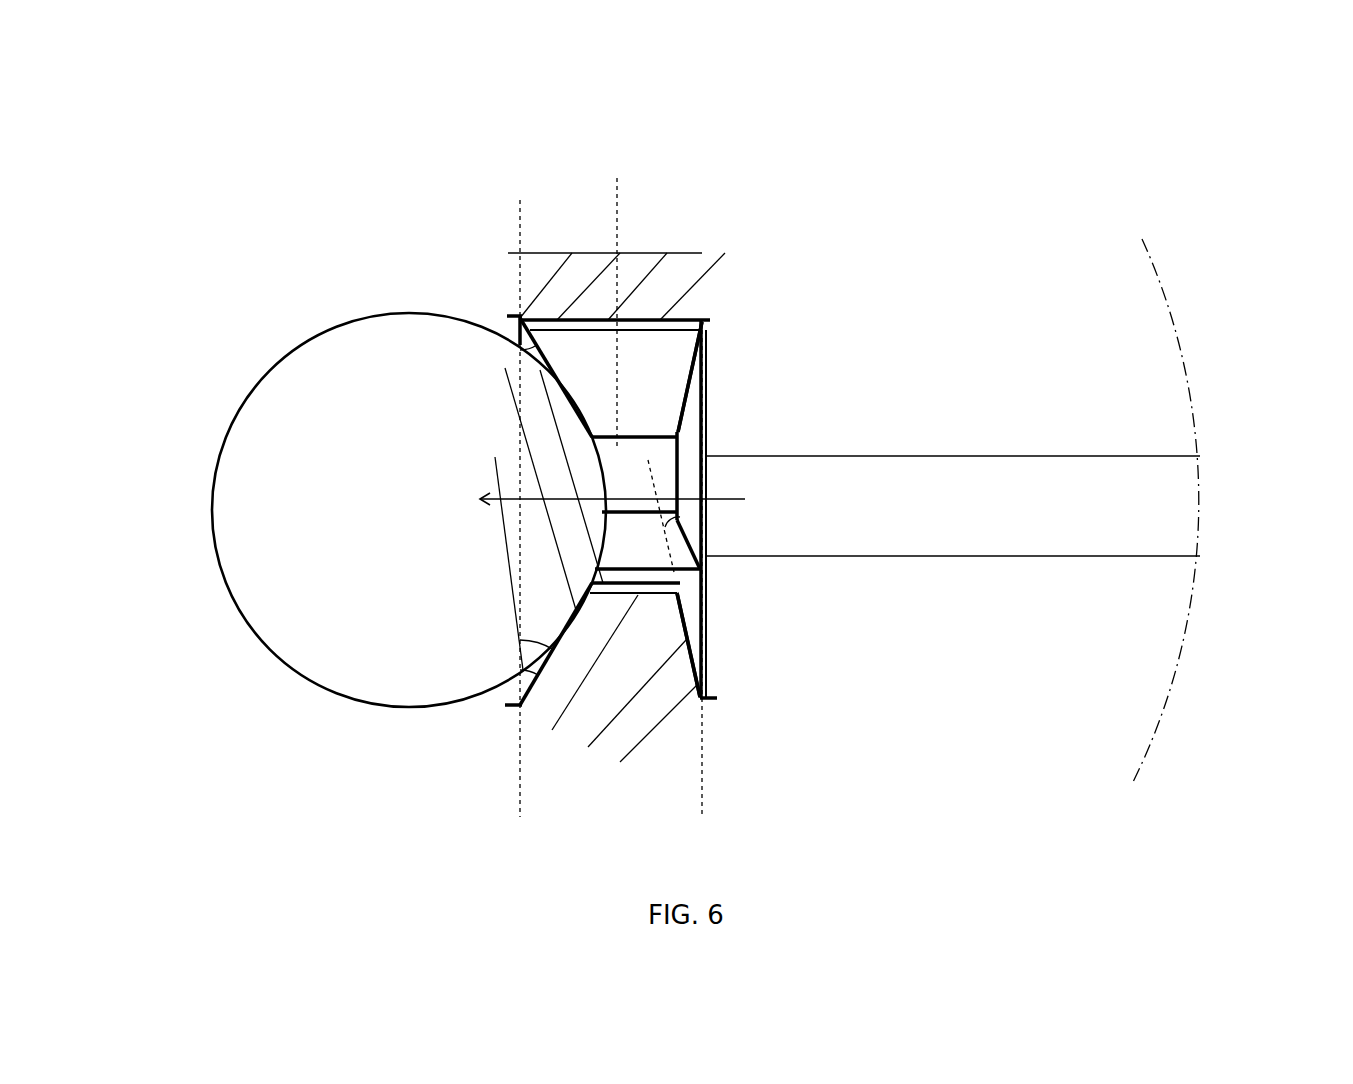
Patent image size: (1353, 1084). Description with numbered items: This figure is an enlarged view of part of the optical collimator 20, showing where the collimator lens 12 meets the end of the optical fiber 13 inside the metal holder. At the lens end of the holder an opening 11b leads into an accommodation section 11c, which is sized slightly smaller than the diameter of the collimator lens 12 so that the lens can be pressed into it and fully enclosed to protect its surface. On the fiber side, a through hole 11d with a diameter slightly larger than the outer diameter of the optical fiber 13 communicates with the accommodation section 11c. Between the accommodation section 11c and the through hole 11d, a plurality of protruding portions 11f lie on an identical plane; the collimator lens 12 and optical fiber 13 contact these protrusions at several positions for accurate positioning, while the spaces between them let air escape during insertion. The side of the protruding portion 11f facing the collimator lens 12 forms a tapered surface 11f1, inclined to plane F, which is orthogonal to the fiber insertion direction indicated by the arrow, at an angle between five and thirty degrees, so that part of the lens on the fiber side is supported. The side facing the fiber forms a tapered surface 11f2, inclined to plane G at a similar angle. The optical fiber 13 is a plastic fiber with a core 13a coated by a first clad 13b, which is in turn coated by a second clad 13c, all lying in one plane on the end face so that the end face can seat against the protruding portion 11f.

The optical collimator 20 is at (248, 161).
The opening 11b is at (208, 333).
The accommodation section 11c is at (230, 660).
The through hole 11d is at (873, 322).
The protruding portion 11f is at (640, 363).
The tapered surface 11f1 is at (520, 315).
The tapered surface 11f2 is at (688, 392).
The collimator lens 12 is at (228, 482).
The optical fiber 13 is at (1300, 410).
The core 13a is at (1172, 500).
The first clad 13b is at (1172, 464).
The second clad 13c is at (1168, 412).